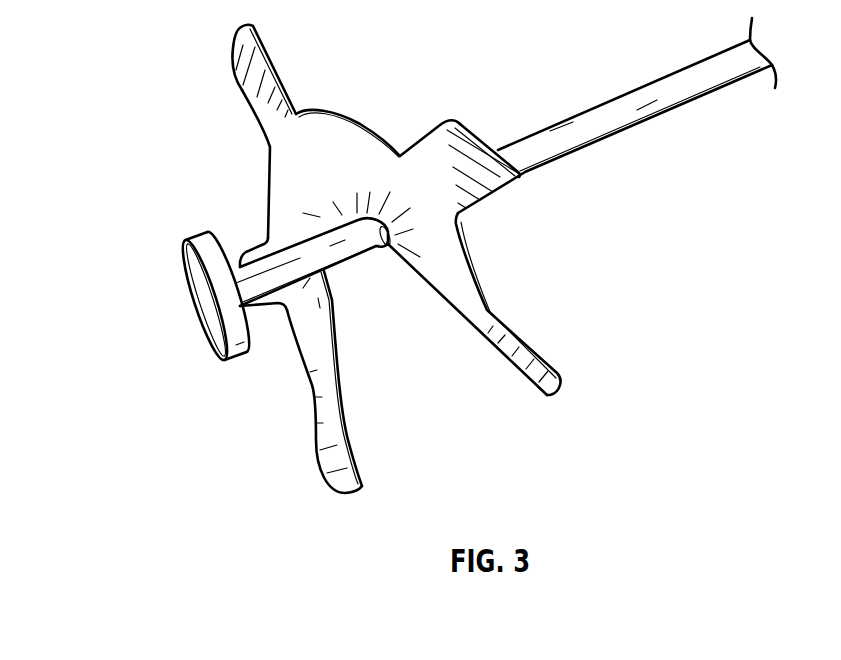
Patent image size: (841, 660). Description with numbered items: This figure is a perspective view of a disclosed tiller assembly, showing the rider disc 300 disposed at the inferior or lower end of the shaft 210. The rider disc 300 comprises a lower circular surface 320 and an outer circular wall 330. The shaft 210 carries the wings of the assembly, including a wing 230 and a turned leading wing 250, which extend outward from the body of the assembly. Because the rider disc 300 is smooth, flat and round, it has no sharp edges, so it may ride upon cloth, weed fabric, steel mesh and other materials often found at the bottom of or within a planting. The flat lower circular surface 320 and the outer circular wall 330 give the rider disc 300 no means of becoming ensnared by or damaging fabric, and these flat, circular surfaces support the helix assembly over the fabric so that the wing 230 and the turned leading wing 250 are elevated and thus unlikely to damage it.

The shaft 210 is at (682, 77).
The wing 230 is at (282, 48).
The turned leading wing 250 is at (292, 447).
The rider disc 300 is at (230, 268).
The lower circular surface 320 is at (203, 305).
The outer circular wall 330 is at (194, 239).